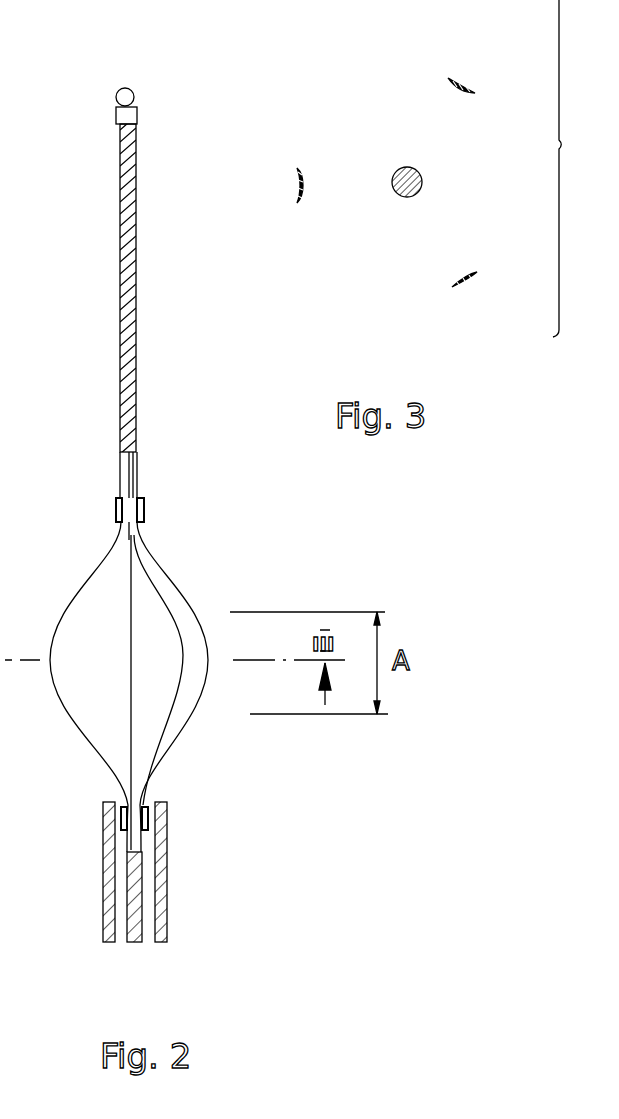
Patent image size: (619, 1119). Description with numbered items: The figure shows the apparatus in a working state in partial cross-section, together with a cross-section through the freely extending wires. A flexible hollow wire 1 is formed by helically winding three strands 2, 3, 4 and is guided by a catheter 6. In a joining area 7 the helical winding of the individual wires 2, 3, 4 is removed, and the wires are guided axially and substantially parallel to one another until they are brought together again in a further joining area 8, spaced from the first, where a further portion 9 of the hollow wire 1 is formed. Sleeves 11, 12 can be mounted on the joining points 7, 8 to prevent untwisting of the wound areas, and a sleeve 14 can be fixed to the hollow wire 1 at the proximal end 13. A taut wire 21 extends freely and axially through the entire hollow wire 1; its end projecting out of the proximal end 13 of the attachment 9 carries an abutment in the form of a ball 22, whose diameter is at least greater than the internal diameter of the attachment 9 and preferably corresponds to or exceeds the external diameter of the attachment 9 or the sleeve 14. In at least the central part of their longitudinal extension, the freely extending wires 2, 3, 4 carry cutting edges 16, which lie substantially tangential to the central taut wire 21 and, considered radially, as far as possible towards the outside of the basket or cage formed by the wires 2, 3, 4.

In FIG. 2, the flexible hollow wire 1 is at (136, 900).
In FIG. 2, the strand 2 is at (62, 708).
In FIG. 3, the strand 2 is at (292, 178).
In FIG. 2, the strand 3 is at (200, 698).
In FIG. 3, the strand 3 is at (472, 78).
In FIG. 2, the strand 4 is at (166, 723).
In FIG. 3, the strand 4 is at (480, 292).
In FIG. 2, the catheter 6 is at (160, 850).
In FIG. 2, the joining area 7 is at (215, 784).
In FIG. 2, the further joining area 8 is at (112, 510).
In FIG. 2, the further portion of the hollow wire 9 is at (134, 295).
In FIG. 2, the sleeve 11 is at (148, 818).
In FIG. 2, the sleeve 12 is at (142, 505).
In FIG. 2, the proximal end 13 is at (108, 116).
In FIG. 2, the sleeve 14 is at (135, 115).
In FIG. 3, the cutting edges 16 is at (448, 290).
In FIG. 2, the taut wire 21 is at (132, 570).
In FIG. 3, the taut wire 21 is at (397, 171).
In FIG. 2, the ball 22 is at (128, 89).